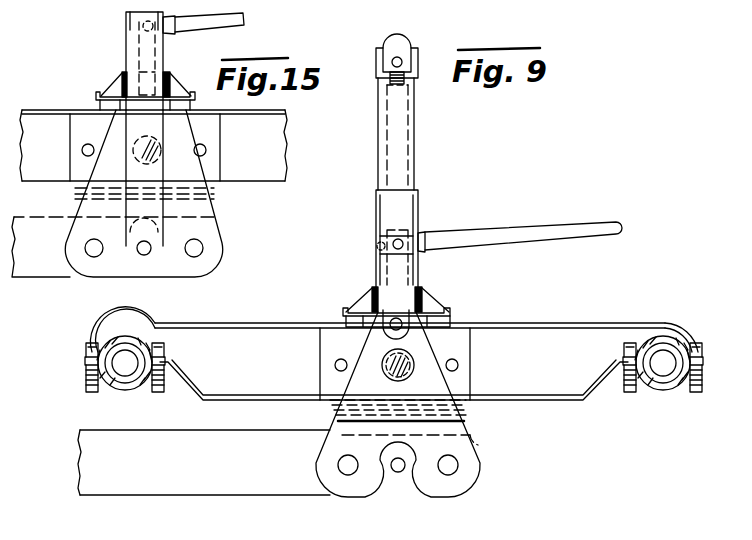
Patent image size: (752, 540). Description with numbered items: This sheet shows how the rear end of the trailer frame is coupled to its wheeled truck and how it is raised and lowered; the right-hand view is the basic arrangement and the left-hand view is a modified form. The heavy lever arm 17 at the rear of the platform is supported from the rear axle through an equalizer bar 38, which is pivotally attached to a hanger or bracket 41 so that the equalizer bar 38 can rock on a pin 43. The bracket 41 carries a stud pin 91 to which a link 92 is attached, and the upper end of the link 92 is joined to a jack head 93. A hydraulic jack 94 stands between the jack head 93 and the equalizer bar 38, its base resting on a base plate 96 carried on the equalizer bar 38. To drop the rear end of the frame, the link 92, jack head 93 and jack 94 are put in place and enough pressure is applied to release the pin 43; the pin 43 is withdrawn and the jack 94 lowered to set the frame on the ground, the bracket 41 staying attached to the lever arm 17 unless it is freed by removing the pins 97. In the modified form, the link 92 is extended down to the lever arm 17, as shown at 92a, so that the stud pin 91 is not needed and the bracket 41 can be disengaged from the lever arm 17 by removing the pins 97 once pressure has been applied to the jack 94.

In FIG. 15, the lever arm 17 is at (30, 265).
In FIG. 9, the lever arm 17 is at (122, 474).
In FIG. 15, the equalizer bar 38 is at (265, 176).
In FIG. 9, the equalizer bar 38 is at (575, 383).
In FIG. 9, the hanger 41 is at (464, 432).
In FIG. 15, the pin 43 is at (158, 168).
In FIG. 9, the pin 43 is at (406, 372).
In FIG. 9, the stud pin 91 is at (400, 322).
In FIG. 9, the link 92 is at (410, 152).
In FIG. 15, the extended link 92a is at (137, 62).
In FIG. 9, the jack head 93 is at (411, 50).
In FIG. 15, the hydraulic jack 94 is at (125, 44).
In FIG. 9, the hydraulic jack 94 is at (419, 204).
In FIG. 15, the base plate 96 is at (97, 103).
In FIG. 9, the base plate 96 is at (435, 320).
In FIG. 15, the pin 97 is at (92, 252).
In FIG. 9, the pin 97 is at (453, 465).